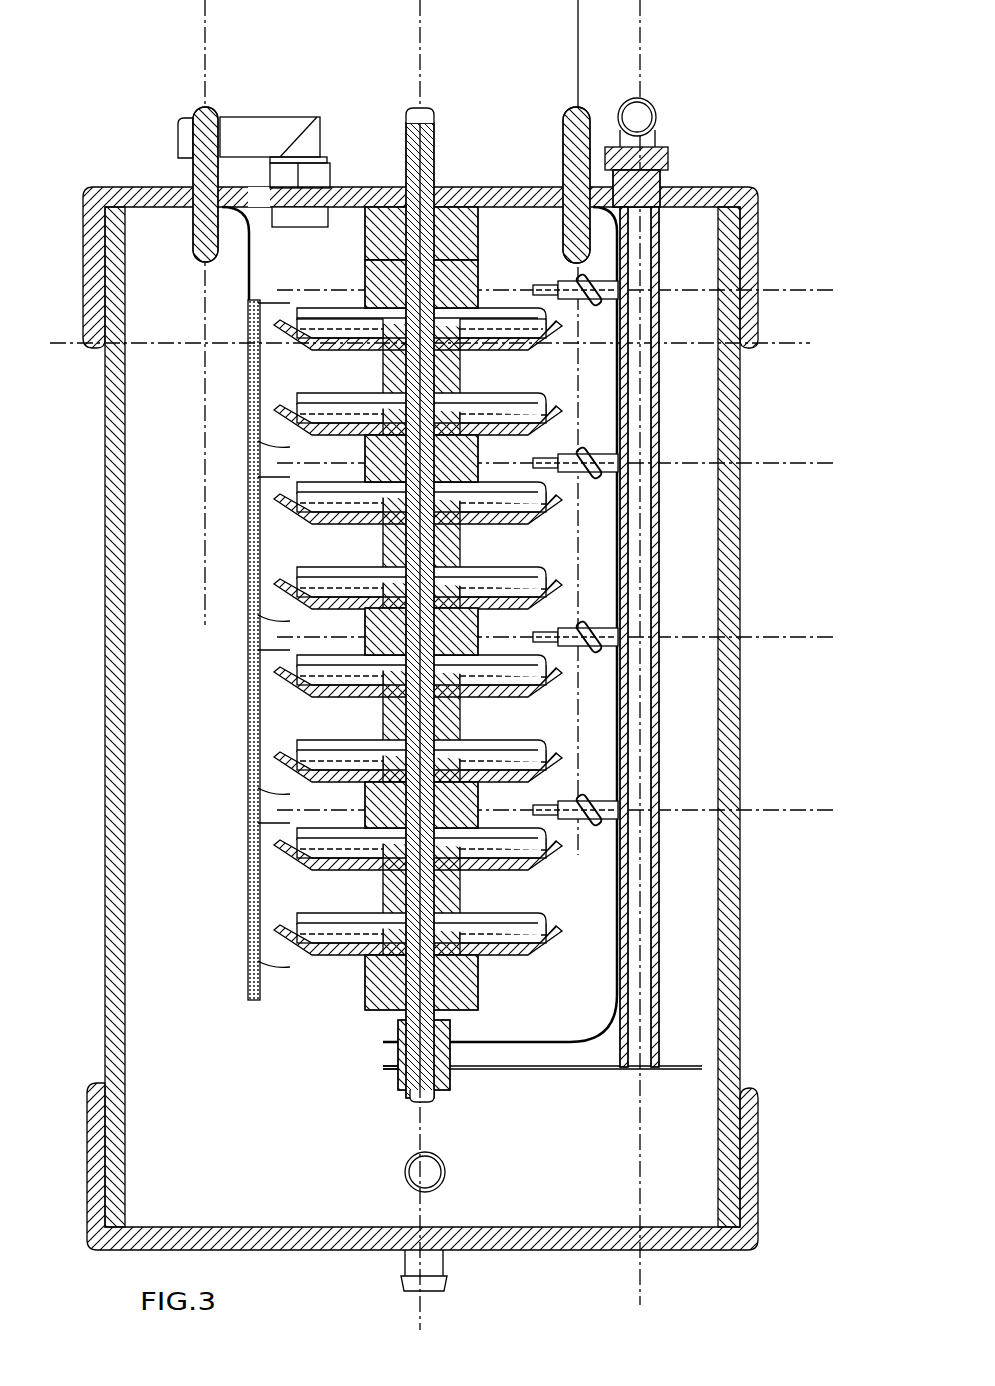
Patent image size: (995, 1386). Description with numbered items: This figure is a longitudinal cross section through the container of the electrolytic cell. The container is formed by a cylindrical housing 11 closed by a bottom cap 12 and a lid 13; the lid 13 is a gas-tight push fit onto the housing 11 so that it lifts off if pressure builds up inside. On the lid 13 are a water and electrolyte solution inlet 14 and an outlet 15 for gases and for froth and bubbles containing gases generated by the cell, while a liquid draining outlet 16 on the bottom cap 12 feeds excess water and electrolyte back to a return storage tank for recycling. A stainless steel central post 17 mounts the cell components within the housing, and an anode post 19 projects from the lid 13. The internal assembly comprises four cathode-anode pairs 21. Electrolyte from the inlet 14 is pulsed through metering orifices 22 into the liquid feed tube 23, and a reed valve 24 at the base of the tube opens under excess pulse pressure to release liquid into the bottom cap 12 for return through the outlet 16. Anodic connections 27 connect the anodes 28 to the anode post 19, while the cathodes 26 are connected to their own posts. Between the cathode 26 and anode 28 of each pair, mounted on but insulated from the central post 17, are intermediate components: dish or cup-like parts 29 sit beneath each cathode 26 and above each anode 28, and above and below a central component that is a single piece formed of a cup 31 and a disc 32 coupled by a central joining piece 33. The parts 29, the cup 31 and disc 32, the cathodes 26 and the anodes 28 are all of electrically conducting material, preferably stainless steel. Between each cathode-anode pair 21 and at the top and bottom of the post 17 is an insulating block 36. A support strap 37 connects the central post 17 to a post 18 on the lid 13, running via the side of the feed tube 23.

The cylindrical housing 11 is at (740, 575).
The bottom cap 12 is at (668, 1250).
The lid 13 is at (748, 238).
The water and electrolyte solution inlet 14 is at (650, 122).
The outlet 15 is at (267, 128).
The liquid draining outlet 16 is at (442, 1282).
The central post 17 is at (416, 1100).
The post 18 is at (572, 165).
The anode post 19 is at (198, 178).
The cathode-anode pair 21 is at (245, 440).
The metering orifice 22 is at (560, 286).
The liquid feed tube 23 is at (660, 536).
The reed valve 24 is at (622, 1070).
The cathode 26 is at (336, 307).
The anodic connection 27 is at (243, 270).
The anode 28 is at (567, 405).
The dish or cup-like part 29 is at (372, 346).
The cup 31 is at (564, 332).
The disc 32 is at (332, 396).
The central joining piece 33 is at (460, 382).
The insulating block 36 is at (470, 262).
The support strap 37 is at (505, 1040).